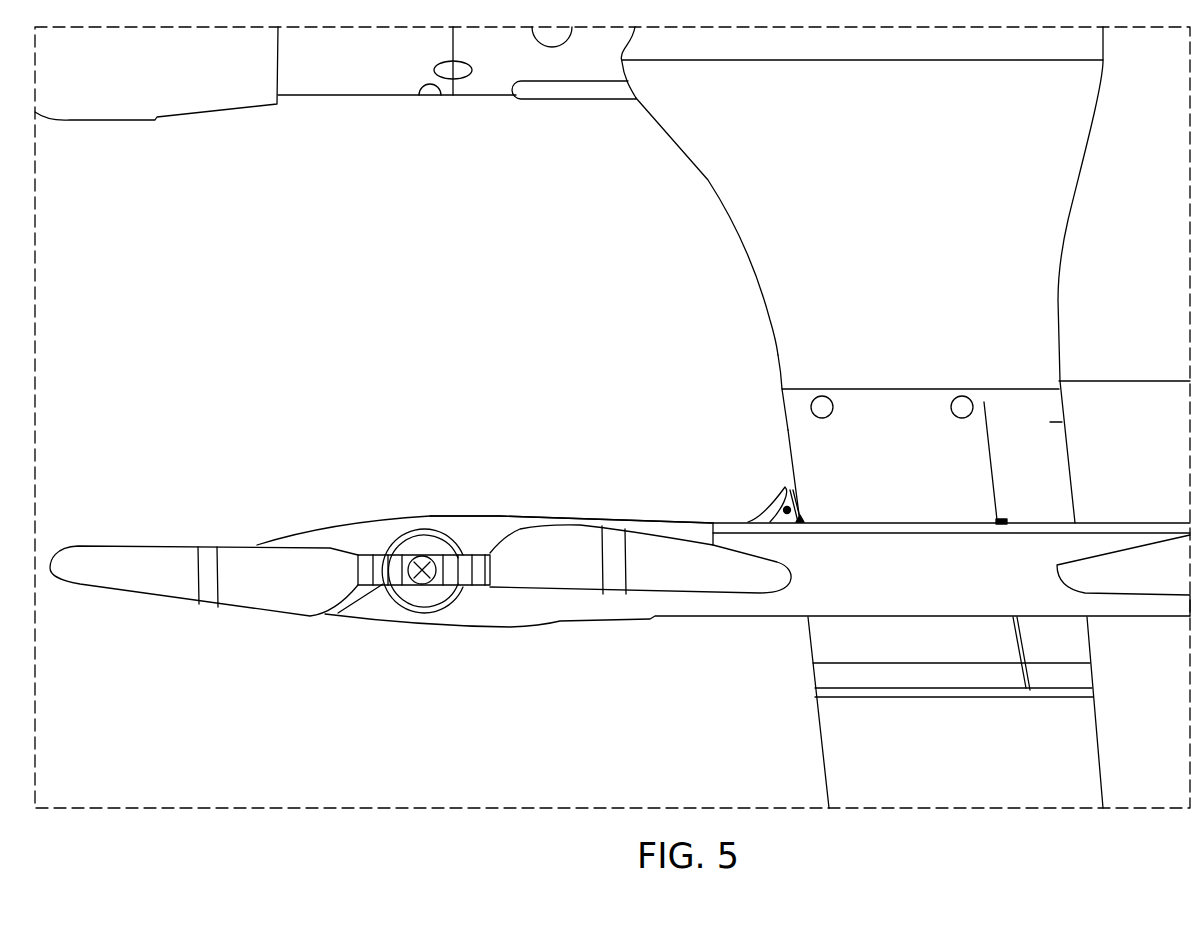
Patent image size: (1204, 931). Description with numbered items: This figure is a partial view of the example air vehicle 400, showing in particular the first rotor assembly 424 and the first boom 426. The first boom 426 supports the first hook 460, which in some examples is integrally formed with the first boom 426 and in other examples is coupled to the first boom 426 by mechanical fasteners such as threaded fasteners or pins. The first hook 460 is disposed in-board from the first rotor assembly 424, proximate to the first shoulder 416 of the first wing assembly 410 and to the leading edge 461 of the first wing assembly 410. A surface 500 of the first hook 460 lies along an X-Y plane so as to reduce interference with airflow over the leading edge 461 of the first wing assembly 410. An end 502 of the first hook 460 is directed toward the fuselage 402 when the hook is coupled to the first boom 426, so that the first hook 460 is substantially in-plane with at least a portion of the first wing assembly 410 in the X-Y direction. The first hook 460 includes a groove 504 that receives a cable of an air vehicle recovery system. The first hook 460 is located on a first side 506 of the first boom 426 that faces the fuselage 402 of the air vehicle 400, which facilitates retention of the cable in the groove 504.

The air vehicle 400 is at (180, 138).
The fuselage 402 is at (388, 97).
The first wing assembly 410 is at (688, 397).
The first shoulder 416 is at (763, 248).
The leading edge 461 is at (778, 353).
The first hook 460 is at (760, 472).
The first rotor assembly 424 is at (462, 492).
The first boom 426 is at (668, 623).
The surface 500 is at (762, 512).
The end 502 is at (788, 497).
The groove 504 is at (790, 508).
The first side 506 is at (668, 522).